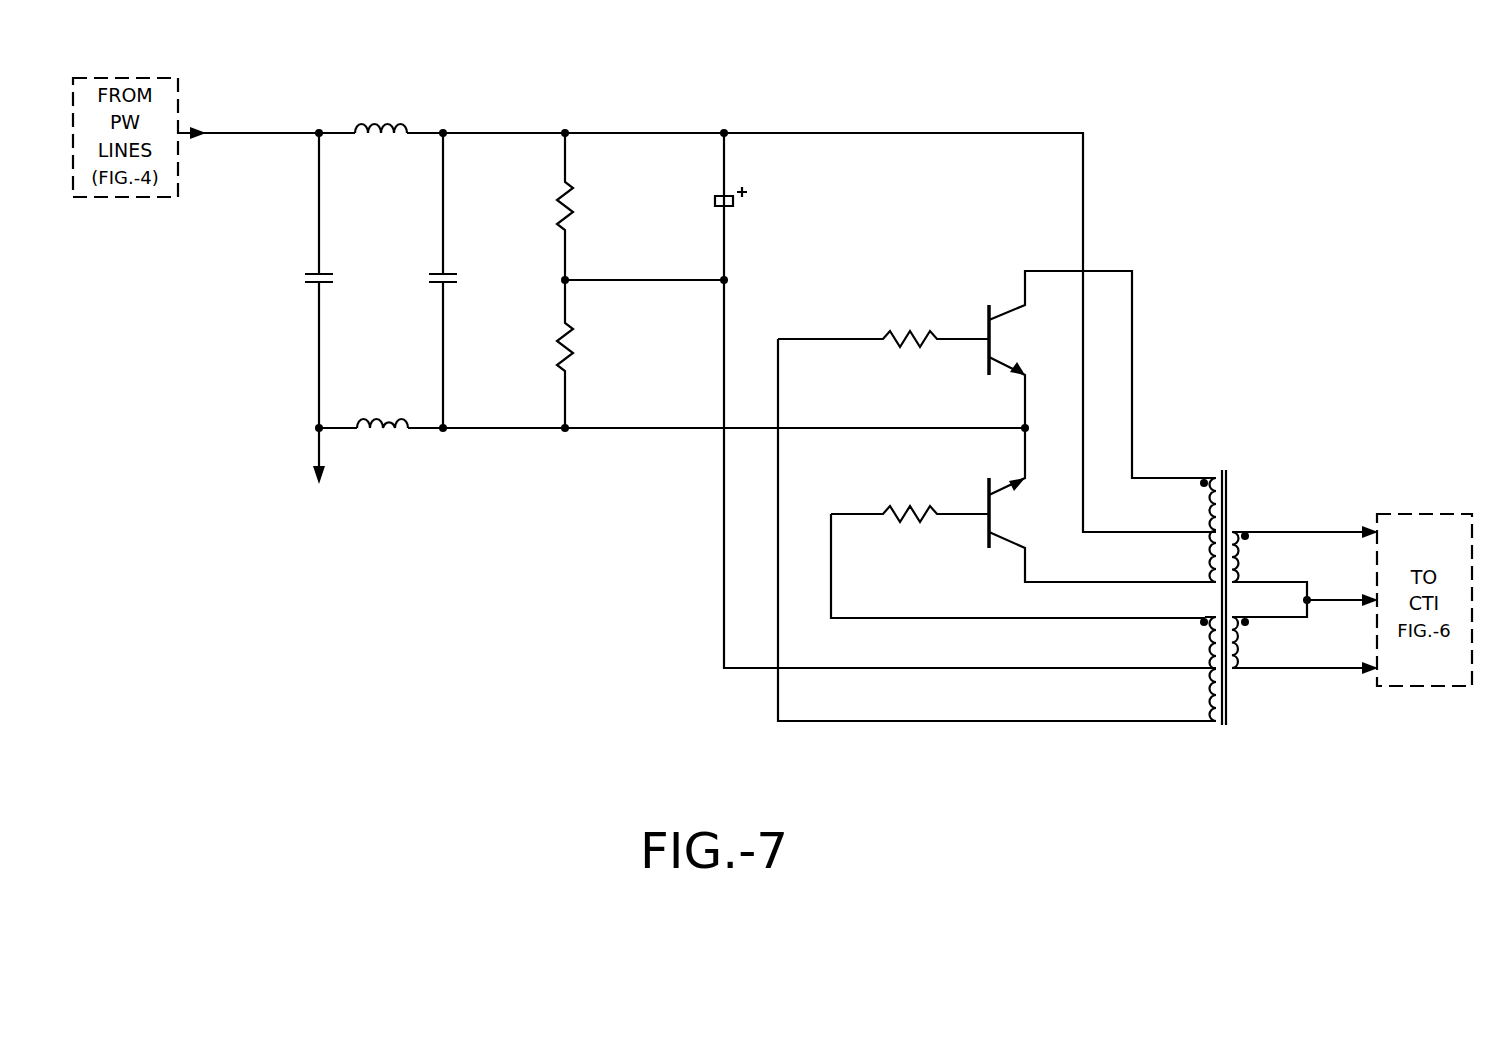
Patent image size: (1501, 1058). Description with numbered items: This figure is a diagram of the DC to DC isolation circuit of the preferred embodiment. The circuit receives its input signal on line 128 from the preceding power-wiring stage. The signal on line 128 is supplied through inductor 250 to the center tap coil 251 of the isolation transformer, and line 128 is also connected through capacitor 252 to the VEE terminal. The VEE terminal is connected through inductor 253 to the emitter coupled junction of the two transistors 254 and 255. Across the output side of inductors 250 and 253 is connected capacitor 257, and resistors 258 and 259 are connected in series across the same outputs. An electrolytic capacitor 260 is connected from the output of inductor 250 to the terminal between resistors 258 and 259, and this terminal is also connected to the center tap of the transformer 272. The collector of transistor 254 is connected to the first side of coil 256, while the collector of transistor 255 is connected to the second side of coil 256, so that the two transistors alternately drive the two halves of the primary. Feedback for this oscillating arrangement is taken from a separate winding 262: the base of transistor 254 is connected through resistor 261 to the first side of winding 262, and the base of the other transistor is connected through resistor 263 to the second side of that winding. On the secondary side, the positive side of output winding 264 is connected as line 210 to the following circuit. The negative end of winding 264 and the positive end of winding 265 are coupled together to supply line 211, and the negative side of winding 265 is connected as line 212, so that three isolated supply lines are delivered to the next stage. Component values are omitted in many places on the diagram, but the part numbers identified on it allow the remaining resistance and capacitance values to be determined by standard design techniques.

The line 128 is at (282, 134).
The inductor 250 is at (376, 115).
The capacitor 252 is at (306, 290).
The inductor 253 is at (383, 442).
The transistor 254 is at (982, 312).
The transistor 255 is at (978, 525).
The coil 256 is at (1212, 478).
The capacitor 257 is at (430, 286).
The resistor 258 is at (572, 222).
The resistor 259 is at (572, 342).
The electrolytic capacitor 260 is at (735, 190).
The resistor 261 is at (905, 330).
The winding 262 is at (1210, 726).
The resistor 263 is at (906, 502).
The output winding 264 is at (1240, 530).
The winding 265 is at (1240, 672).
The transformer 251 is at (1216, 577).
The transformer 272 is at (1236, 734).
The line 210 is at (1328, 510).
The line 211 is at (1343, 592).
The line 212 is at (1336, 672).